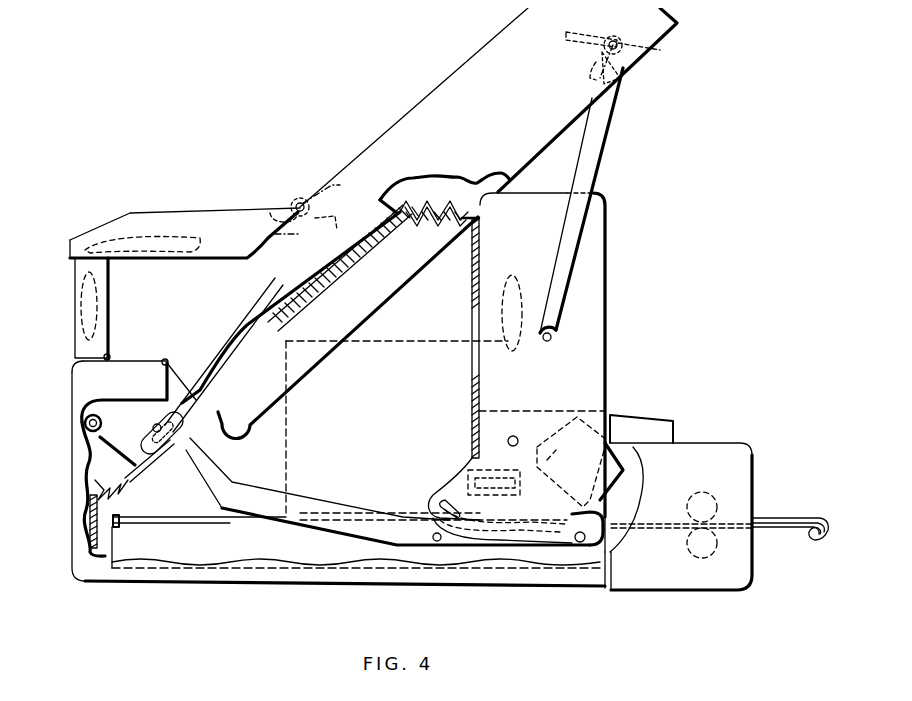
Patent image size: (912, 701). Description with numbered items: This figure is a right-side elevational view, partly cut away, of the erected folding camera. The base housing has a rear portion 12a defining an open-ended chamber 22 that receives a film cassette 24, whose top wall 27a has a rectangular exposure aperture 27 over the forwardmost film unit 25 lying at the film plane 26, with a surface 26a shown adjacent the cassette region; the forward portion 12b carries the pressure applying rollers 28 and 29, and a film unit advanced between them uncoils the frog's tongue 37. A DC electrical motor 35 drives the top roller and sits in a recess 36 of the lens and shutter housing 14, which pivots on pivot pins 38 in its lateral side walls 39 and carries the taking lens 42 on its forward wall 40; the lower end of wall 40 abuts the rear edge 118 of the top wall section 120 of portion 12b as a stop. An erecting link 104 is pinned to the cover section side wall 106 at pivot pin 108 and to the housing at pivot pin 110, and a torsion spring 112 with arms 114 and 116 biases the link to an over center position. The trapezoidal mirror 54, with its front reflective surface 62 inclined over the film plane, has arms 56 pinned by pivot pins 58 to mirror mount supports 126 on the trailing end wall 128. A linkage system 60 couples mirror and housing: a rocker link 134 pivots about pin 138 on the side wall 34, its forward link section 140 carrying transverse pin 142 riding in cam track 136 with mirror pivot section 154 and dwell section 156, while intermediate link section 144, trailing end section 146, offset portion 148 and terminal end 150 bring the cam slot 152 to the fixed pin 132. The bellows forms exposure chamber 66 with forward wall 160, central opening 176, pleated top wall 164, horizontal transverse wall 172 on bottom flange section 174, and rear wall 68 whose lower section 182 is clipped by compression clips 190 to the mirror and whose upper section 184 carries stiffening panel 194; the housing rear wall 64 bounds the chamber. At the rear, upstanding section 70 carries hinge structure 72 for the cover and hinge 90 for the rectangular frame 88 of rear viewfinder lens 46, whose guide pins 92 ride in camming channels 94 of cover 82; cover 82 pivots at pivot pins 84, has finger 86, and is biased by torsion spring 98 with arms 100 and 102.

The rear portion 12a is at (97, 584).
The forward portion 12b is at (690, 583).
The lens and shutter housing 14 is at (607, 190).
The open-ended chamber 22 is at (100, 549).
The film cassette 24 is at (136, 560).
The film unit 25 is at (637, 505).
The film plane 26 is at (143, 526).
The feed surface 26a is at (130, 548).
The exposure aperture 27 is at (198, 514).
The top wall 27a is at (117, 516).
The pressure applying roller 28 is at (715, 503).
The pressure applying roller 29 is at (712, 550).
The side wall 34 is at (393, 578).
The DC electrical motor 35 is at (552, 458).
The recess 36 is at (534, 417).
The frog's tongue 37 is at (828, 538).
The pivot pin 38 is at (509, 438).
The lateral side wall 39 is at (585, 352).
The forward wall 40 is at (607, 236).
The taking lens 42 is at (521, 302).
The rear viewfinder lens 46 is at (100, 296).
The mirror 54 is at (253, 378).
The arm 56 is at (93, 447).
The pivot pin 58 is at (84, 424).
The linkage system 60 is at (352, 550).
The front reflective surface 62 is at (250, 398).
The rear wall 64 is at (471, 206).
The exposure chamber 66 is at (456, 280).
The rear wall 68 is at (272, 320).
The upstanding section 70 is at (75, 372).
The hinge structure 72 is at (124, 392).
The cover 82 is at (243, 211).
The pivot pin 84 is at (300, 200).
The finger 86 is at (330, 226).
The rectangular frame 88 is at (76, 280).
The hinge 90 is at (110, 355).
The guide pin 92 is at (100, 240).
The guide and camming channel 94 is at (168, 245).
The torsion spring 98 is at (304, 200).
The spring arm 100 is at (276, 208).
The spring arm 102 is at (340, 188).
The erecting link 104 is at (604, 115).
The side wall 106 is at (537, 135).
The pivot pin 108 is at (615, 38).
The pivot pin 110 is at (556, 332).
The torsion spring 112 is at (648, 50).
The spring arm 114 is at (574, 26).
The spring arm 116 is at (614, 78).
The rear edge 118 is at (612, 430).
The top wall section 120 is at (660, 433).
The mirror mount support 126 is at (110, 452).
The trailing end wall 128 is at (76, 415).
The fixed pin 132 is at (118, 480).
The rocker link 134 is at (422, 552).
The cam track 136 is at (520, 540).
The pin 138 is at (440, 542).
The forward link section 140 is at (545, 548).
The transverse pin 142 is at (606, 548).
The intermediate link section 144 is at (317, 527).
The trailing end section 146 is at (220, 482).
The offset portion 148 is at (190, 441).
The terminal end 150 is at (166, 452).
The cam slot 152 is at (160, 420).
The mirror pivot section 154 is at (580, 545).
The dwell section 156 is at (490, 530).
The forward wall 160 is at (481, 248).
The top wall 164 is at (432, 200).
The horizontal transverse wall 172 is at (455, 490).
The bottom flange section 174 is at (508, 480).
The central opening 176 is at (471, 369).
The lower section 182 is at (243, 345).
The upper section 184 is at (318, 282).
The compression clip 190 is at (265, 325).
The stiffening panel 194 is at (355, 262).